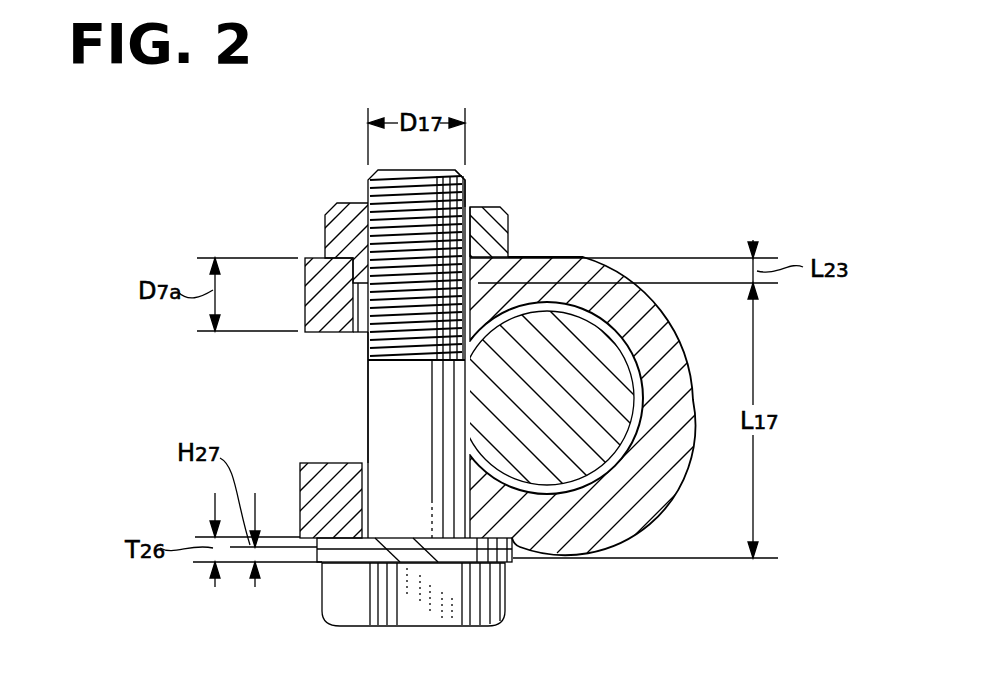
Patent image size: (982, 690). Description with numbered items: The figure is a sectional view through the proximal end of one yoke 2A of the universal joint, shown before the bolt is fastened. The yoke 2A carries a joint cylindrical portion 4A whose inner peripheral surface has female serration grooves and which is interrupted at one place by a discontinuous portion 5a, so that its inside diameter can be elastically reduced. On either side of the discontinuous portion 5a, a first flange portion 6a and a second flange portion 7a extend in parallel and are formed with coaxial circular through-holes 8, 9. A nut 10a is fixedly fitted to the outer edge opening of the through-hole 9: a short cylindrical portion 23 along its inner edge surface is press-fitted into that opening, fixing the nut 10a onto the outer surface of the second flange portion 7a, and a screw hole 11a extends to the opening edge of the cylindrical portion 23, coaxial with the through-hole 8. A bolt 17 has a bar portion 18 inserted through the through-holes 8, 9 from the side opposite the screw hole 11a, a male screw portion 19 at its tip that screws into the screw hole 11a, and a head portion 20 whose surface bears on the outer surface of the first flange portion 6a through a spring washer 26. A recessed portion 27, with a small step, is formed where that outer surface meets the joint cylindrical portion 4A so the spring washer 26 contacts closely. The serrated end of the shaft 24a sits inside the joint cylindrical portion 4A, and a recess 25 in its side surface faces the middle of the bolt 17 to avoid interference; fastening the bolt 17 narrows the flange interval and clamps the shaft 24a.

The yoke 2A is at (632, 219).
The joint cylindrical portion 4A is at (633, 262).
The discontinuous portion 5a is at (348, 417).
The first flange portion 6a is at (332, 472).
The second flange portion 7a is at (312, 258).
The through-hole 8 is at (368, 566).
The through-hole 9 is at (370, 305).
The nut 10a is at (508, 233).
The screw hole 11a is at (471, 207).
The bolt 17 is at (382, 384).
The bar portion 18 is at (447, 555).
The male screw portion 19 is at (468, 196).
The head portion 20 is at (402, 597).
The cylindrical portion 23 is at (352, 266).
The shaft 24a is at (593, 437).
The recess 25 is at (478, 393).
The spring washer 26 is at (347, 553).
The recessed portion 27 is at (500, 571).